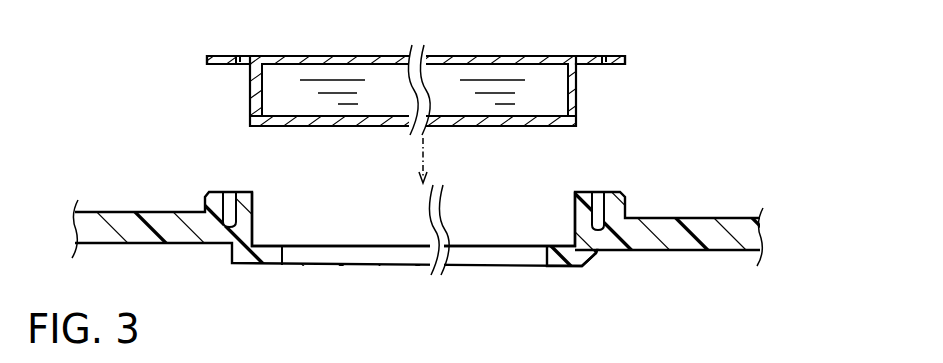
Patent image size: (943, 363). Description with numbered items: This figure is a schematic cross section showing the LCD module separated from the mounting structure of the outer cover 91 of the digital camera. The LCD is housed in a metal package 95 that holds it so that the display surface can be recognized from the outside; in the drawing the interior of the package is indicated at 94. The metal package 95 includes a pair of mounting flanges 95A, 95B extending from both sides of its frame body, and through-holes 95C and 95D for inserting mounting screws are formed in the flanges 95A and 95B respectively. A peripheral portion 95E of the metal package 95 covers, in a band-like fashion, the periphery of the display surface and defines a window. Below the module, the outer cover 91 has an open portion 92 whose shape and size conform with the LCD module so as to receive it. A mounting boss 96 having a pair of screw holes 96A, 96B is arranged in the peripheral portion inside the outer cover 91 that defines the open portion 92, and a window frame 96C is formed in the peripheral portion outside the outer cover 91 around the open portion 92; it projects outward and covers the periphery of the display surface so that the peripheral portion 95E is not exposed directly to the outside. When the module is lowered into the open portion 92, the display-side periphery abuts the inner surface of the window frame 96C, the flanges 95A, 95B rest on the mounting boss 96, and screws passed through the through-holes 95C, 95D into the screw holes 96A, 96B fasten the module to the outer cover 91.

The outer cover 91 is at (459, 225).
The open portion 92 is at (253, 245).
The filler material 94 is at (452, 68).
The metal package 95 is at (418, 88).
The mounting flange 95A is at (212, 55).
The mounting flange 95B is at (622, 58).
The through-hole 95C is at (233, 55).
The through-hole 95D is at (597, 58).
The peripheral portion 95E is at (278, 128).
The mounting boss 96 is at (577, 196).
The screw hole 96A is at (228, 195).
The screw hole 96B is at (600, 195).
The window frame 96C is at (547, 262).